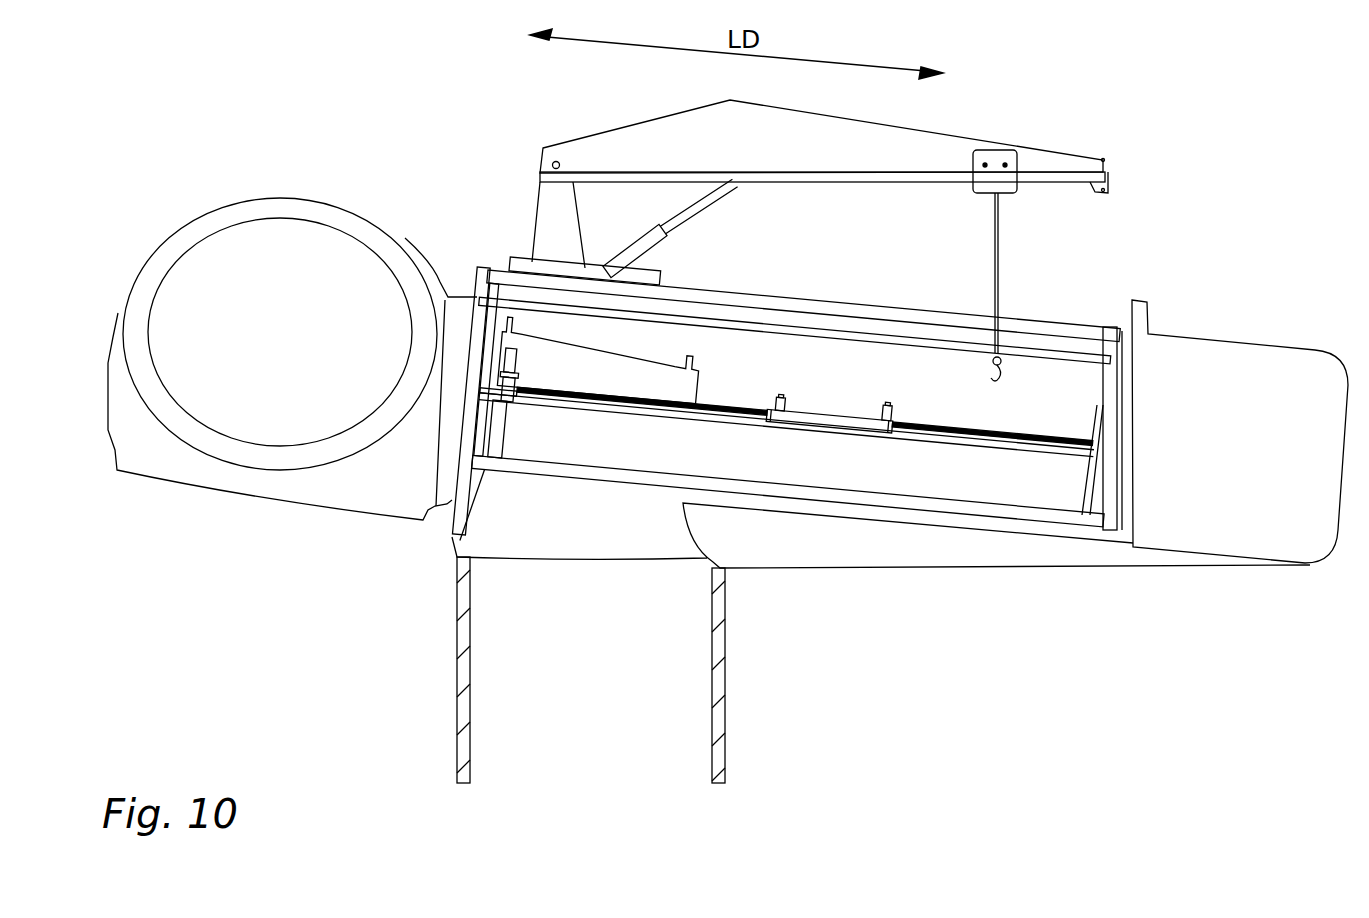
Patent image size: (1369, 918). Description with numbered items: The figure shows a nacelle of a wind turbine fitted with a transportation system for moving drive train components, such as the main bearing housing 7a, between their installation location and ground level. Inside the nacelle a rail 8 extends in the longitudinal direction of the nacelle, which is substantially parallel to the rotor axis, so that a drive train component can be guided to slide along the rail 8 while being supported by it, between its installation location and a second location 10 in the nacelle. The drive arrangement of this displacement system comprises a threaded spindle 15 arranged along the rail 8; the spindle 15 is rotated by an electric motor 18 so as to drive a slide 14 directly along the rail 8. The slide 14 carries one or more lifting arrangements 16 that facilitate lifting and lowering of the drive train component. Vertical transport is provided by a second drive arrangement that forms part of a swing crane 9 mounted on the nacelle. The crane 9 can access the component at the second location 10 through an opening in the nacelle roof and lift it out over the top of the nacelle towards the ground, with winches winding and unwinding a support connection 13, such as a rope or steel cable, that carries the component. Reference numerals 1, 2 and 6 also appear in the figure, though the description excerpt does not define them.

The wind turbine 1 is at (267, 688).
The tower 2 is at (717, 727).
The hub 6 is at (157, 220).
The main bearing housing 7a is at (690, 383).
The rail 8 is at (583, 403).
The swing crane 9 is at (997, 107).
The second location 10 is at (986, 391).
The support connection 13 is at (997, 260).
The slide 14 is at (850, 423).
The threaded spindle 15 is at (667, 410).
The lifting arrangement 16 is at (782, 397).
The electric motor 18 is at (512, 360).